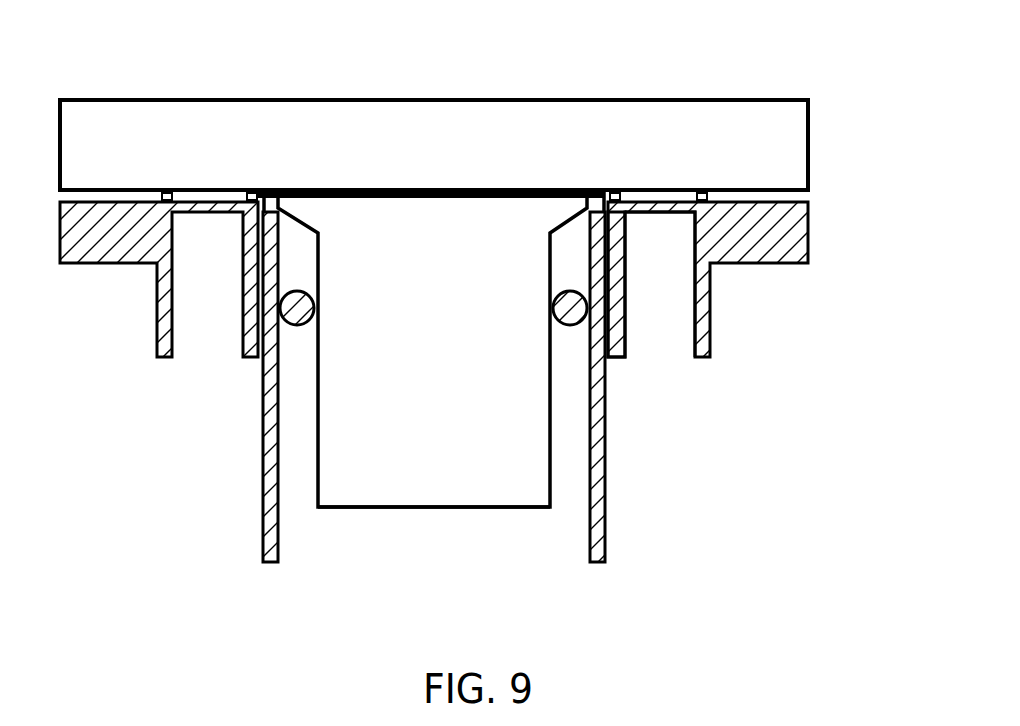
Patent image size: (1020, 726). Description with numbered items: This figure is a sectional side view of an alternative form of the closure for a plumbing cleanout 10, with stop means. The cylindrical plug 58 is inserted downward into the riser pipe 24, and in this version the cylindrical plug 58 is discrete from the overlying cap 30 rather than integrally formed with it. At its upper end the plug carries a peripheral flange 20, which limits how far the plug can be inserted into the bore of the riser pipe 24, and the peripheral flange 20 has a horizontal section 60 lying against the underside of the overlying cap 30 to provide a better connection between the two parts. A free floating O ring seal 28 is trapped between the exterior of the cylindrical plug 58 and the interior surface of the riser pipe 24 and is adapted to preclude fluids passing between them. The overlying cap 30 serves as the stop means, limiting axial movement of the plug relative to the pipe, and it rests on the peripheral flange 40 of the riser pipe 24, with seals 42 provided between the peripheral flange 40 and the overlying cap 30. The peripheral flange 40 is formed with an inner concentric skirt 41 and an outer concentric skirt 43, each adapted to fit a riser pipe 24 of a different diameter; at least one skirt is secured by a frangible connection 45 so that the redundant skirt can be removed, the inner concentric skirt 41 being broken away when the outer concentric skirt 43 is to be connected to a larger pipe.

The closure for a plumbing cleanout 10 is at (218, 78).
The peripheral flange 20 is at (549, 208).
The riser pipe 24 is at (608, 495).
The O ring seal 28 is at (285, 304).
The overlying cap 30 is at (775, 153).
The peripheral flange 40 is at (128, 253).
The inner concentric skirt 41 is at (628, 357).
The seals 42 is at (697, 190).
The outer concentric skirt 43 is at (713, 357).
The frangible connection 45 is at (688, 212).
The cylindrical plug 58 is at (447, 485).
The horizontal section 60 is at (582, 192).